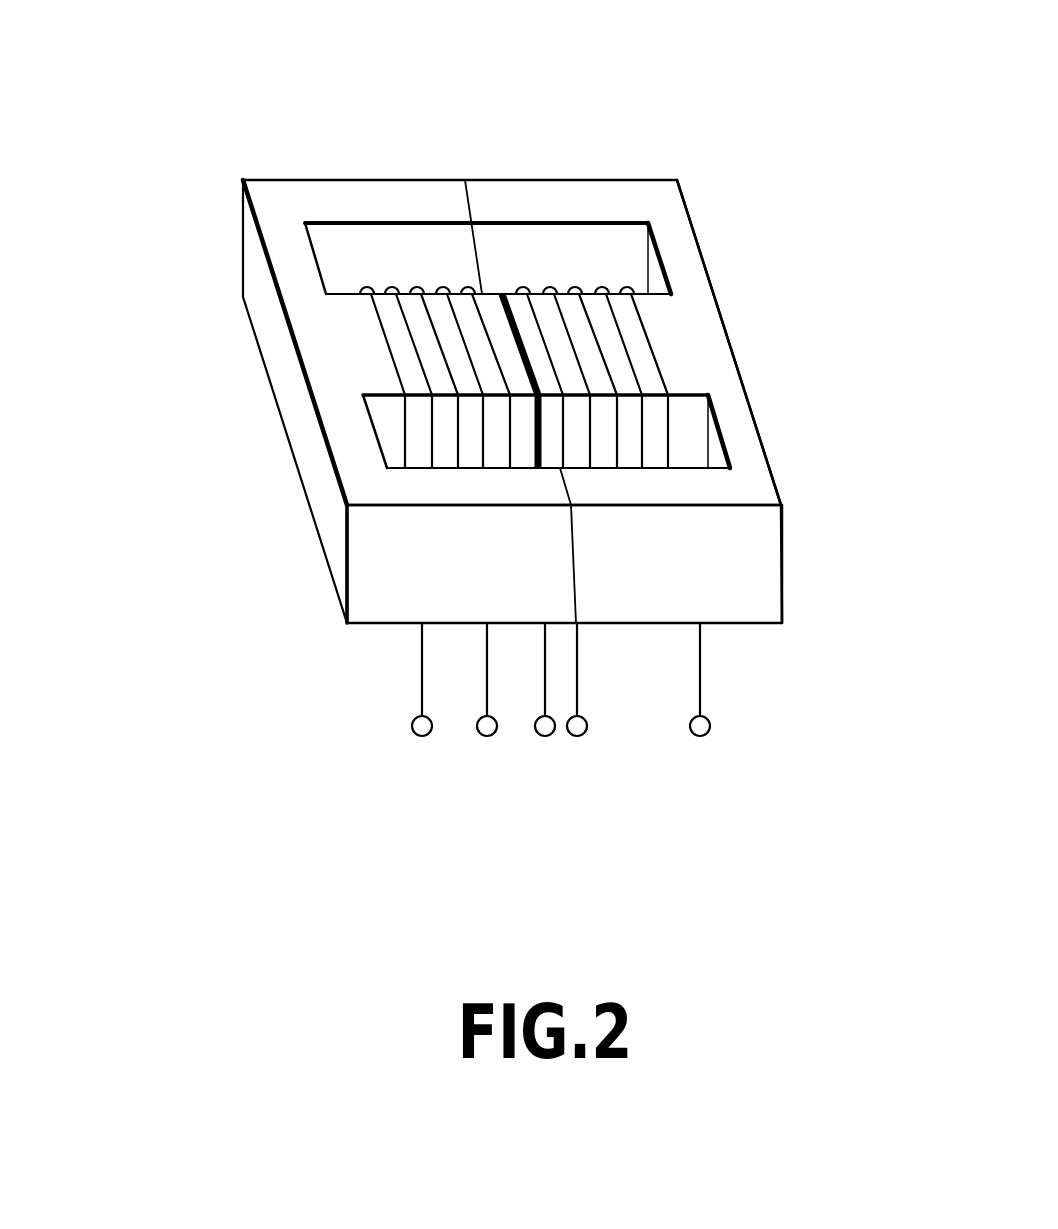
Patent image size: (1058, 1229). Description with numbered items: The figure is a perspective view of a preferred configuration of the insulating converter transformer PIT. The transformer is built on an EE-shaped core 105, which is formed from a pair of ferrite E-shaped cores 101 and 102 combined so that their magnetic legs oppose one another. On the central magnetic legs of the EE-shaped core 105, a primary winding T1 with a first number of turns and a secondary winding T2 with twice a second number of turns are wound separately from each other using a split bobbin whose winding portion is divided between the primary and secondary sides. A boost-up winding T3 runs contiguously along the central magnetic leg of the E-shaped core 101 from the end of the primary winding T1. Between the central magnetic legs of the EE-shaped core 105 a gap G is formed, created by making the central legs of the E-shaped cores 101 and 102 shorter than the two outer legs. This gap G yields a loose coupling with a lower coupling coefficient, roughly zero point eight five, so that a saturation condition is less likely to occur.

The E-shaped core 101 is at (298, 263).
The E-shaped core 102 is at (703, 368).
The EE-shaped core 105 is at (506, 180).
The insulating converter transformer PIT is at (427, 153).
The gap G is at (523, 341).
The primary winding T1 is at (565, 747).
The secondary winding T2 is at (718, 747).
The boost-up winding T3 is at (487, 747).